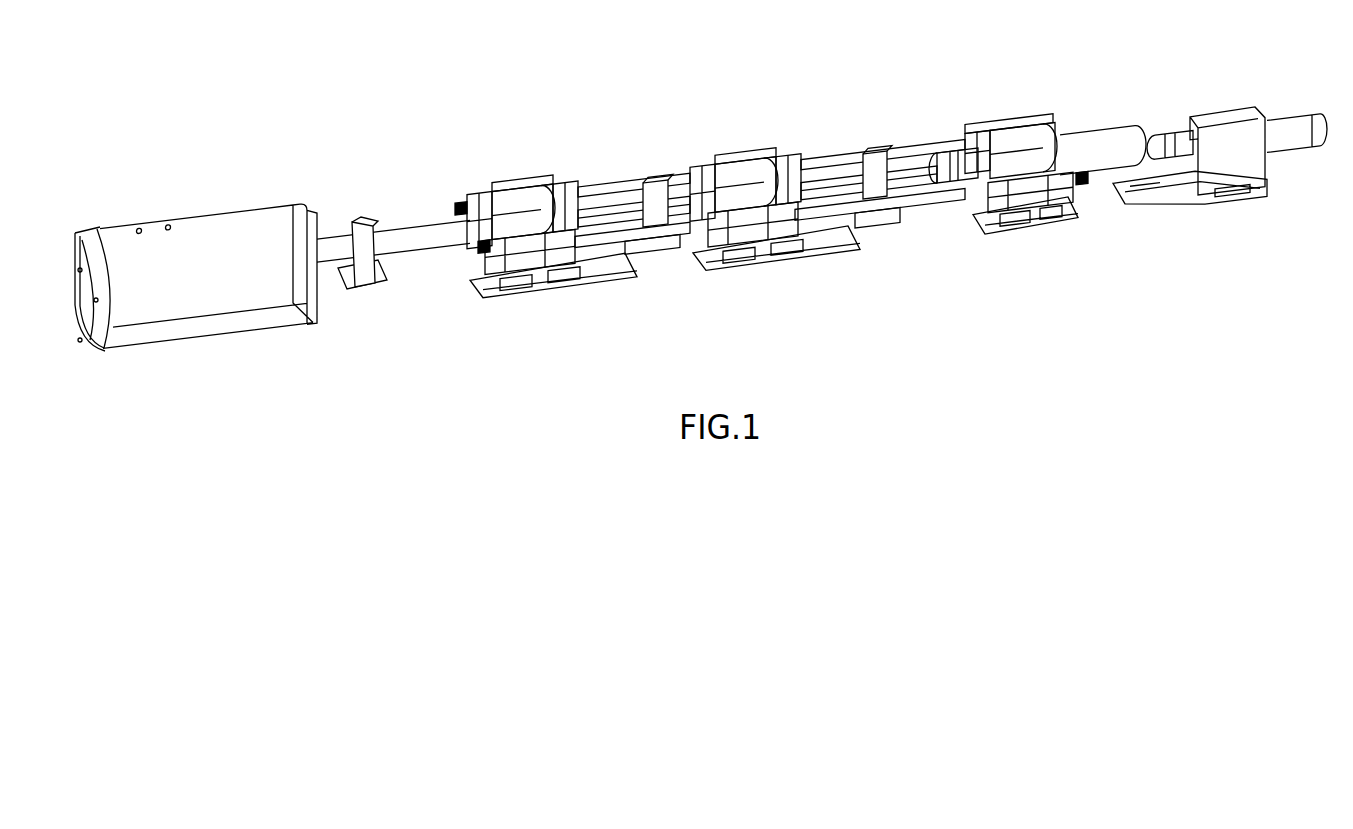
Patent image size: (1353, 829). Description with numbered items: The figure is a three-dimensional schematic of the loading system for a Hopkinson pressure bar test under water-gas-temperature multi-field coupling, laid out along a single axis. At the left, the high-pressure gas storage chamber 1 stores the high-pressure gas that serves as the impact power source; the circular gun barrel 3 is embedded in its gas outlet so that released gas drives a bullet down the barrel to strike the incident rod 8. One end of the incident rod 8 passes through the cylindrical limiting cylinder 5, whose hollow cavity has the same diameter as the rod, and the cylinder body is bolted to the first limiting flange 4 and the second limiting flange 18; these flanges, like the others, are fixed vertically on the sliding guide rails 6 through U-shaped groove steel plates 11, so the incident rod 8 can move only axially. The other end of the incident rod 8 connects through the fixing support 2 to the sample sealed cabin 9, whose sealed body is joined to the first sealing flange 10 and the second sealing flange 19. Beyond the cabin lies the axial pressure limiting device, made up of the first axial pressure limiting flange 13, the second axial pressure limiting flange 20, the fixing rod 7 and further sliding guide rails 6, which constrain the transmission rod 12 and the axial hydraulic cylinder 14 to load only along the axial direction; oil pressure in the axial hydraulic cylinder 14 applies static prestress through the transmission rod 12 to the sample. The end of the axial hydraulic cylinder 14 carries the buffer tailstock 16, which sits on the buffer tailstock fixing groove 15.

The high-pressure gas storage chamber 1 is at (252, 230).
The fixing support 2 is at (358, 217).
The gun barrel 3 is at (420, 230).
The first limiting flange 4 is at (488, 230).
The cylindrical limiting cylinder 5 is at (520, 200).
The sliding guide rail 6 is at (515, 280).
The fixing rod 7 is at (628, 190).
The incident rod 8 is at (613, 215).
The sample sealed cabin 9 is at (732, 180).
The first sealing flange 10 is at (708, 180).
The U-shaped groove steel plate 11 is at (545, 178).
The transmission rod 12 is at (910, 180).
The first axial pressure limiting flange 13 is at (988, 143).
The axial hydraulic cylinder 14 is at (1110, 145).
The buffer tailstock fixing groove 15 is at (1160, 190).
The buffer tailstock 16 is at (1218, 120).
The second limiting flange 18 is at (563, 205).
The second sealing flange 19 is at (785, 175).
The second axial pressure limiting flange 20 is at (1058, 128).